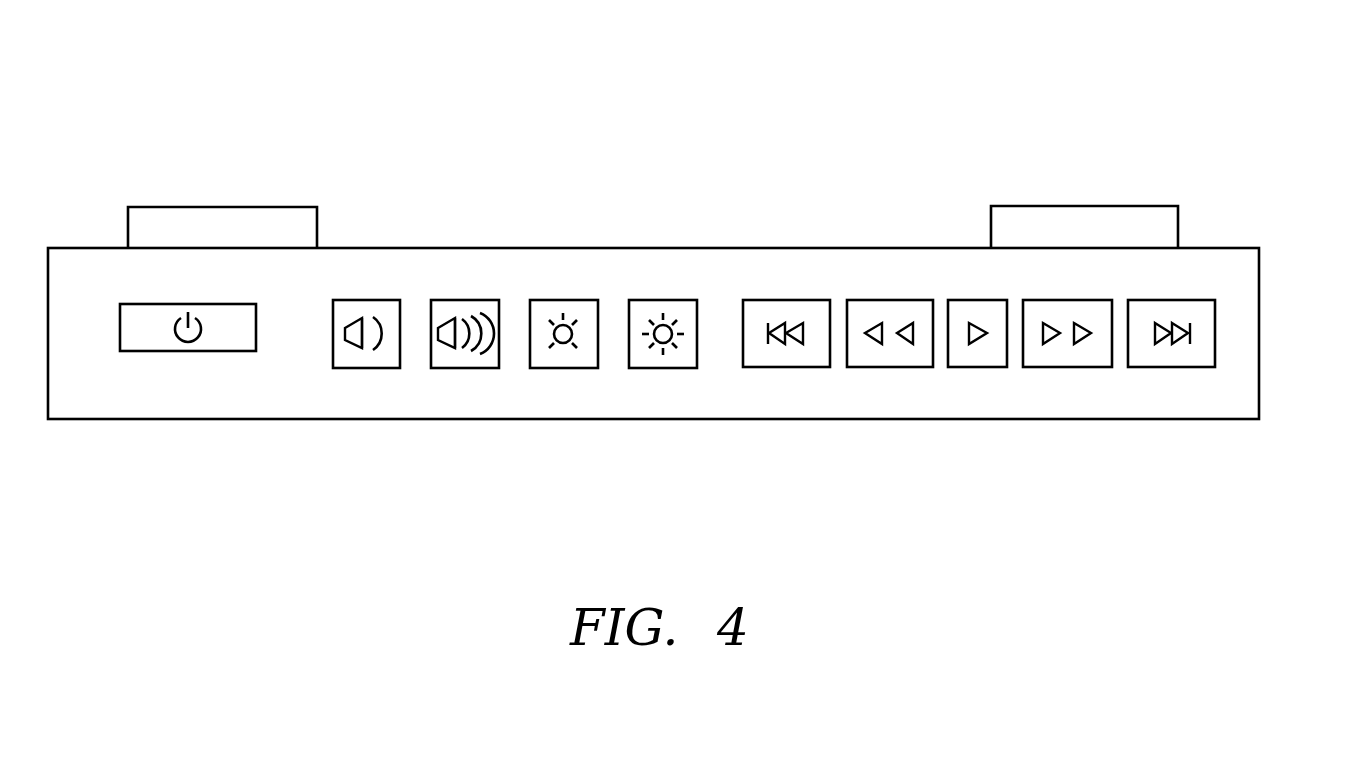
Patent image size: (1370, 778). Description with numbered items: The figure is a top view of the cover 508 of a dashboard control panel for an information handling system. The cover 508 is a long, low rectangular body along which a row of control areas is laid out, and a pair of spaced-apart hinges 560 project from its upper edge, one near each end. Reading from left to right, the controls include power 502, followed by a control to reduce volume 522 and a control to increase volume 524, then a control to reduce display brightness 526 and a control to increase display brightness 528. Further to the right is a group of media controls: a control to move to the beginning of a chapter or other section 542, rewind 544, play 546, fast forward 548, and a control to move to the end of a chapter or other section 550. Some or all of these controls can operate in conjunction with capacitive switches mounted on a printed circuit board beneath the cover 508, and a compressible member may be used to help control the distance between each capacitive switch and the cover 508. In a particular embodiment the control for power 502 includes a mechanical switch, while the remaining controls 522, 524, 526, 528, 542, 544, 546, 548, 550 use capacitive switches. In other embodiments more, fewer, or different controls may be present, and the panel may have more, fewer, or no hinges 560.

The cover 508 is at (1252, 111).
The hinges 560 is at (317, 232).
The power control 502 is at (213, 351).
The reduce volume control 522 is at (368, 368).
The increase volume control 524 is at (470, 368).
The reduce display brightness control 526 is at (567, 368).
The increase display brightness control 528 is at (672, 368).
The move to beginning of chapter control 542 is at (802, 367).
The rewind control 544 is at (905, 367).
The play control 546 is at (983, 367).
The fast forward control 548 is at (1053, 367).
The move to end of chapter control 550 is at (1168, 367).